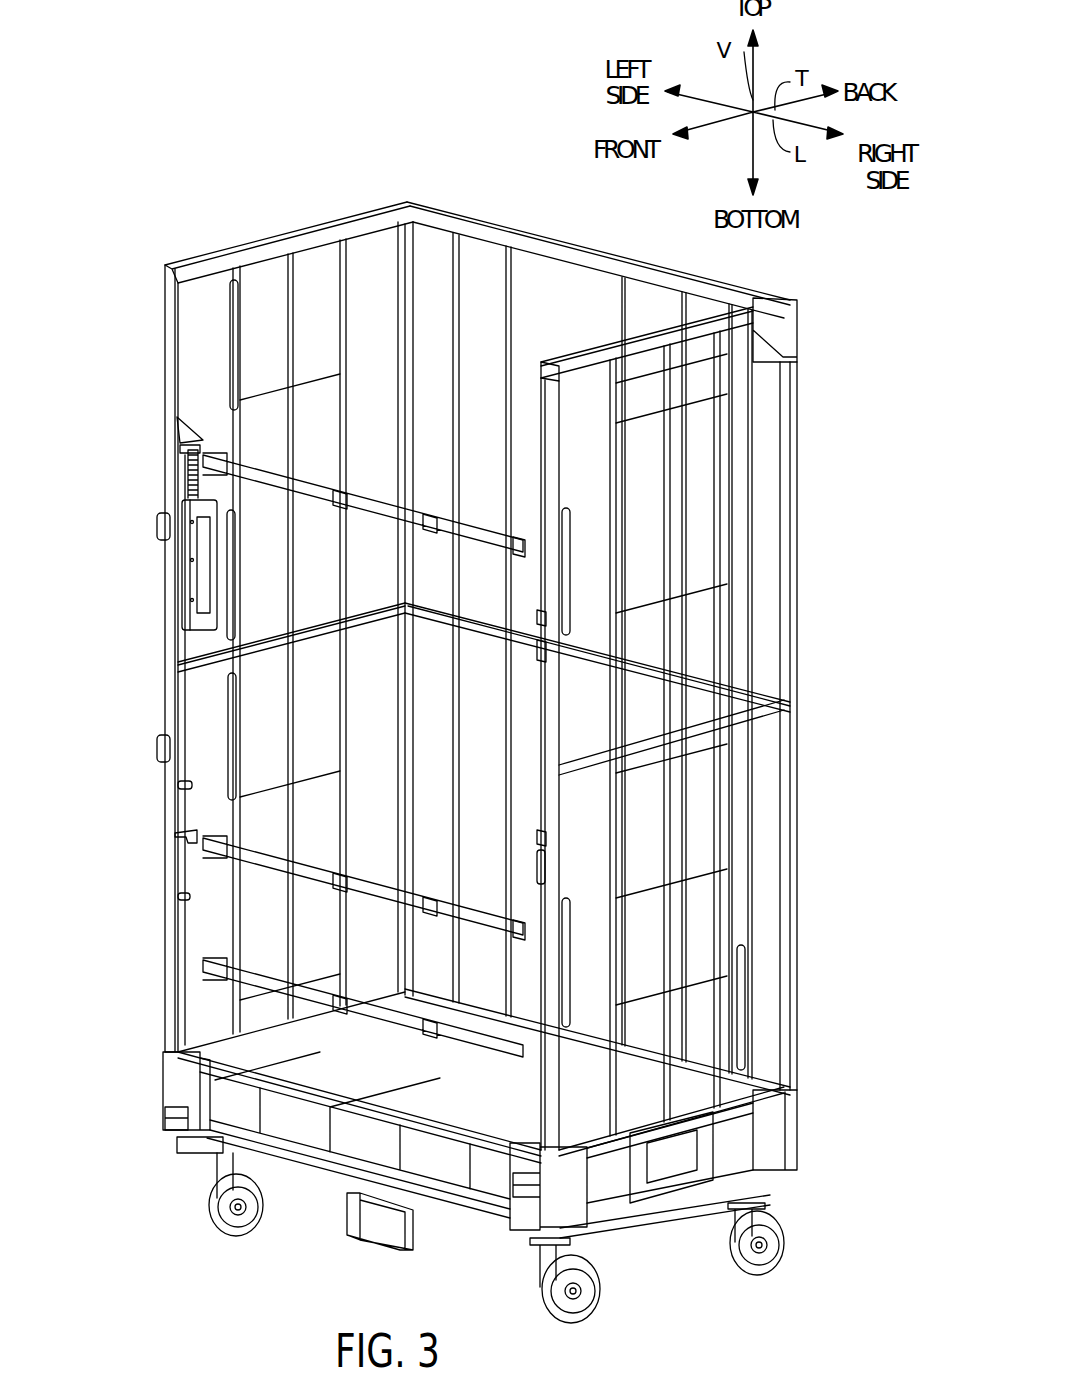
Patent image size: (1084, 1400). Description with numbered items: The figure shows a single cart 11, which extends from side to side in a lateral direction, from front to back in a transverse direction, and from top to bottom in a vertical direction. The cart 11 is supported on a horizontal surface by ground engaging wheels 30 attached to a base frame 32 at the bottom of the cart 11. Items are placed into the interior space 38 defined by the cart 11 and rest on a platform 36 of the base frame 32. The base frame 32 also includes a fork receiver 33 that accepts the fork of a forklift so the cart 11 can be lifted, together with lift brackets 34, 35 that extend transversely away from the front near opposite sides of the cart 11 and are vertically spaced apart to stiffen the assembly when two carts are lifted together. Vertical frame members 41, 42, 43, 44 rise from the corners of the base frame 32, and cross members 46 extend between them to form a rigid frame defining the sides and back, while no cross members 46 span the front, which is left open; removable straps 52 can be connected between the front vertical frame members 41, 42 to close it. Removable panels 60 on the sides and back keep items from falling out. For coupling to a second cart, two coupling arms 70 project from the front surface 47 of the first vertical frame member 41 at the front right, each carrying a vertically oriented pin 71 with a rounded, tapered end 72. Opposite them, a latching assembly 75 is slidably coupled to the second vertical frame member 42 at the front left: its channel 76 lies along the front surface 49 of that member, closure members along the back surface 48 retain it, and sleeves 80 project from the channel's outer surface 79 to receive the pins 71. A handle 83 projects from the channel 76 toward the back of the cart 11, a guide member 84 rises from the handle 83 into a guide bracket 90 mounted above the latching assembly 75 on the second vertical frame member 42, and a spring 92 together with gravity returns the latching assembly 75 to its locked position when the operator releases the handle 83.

The cart 11 is at (362, 218).
The ground engaging wheels 30 is at (266, 1200).
The base frame 32 is at (785, 1118).
The fork receiver 33 is at (367, 1243).
The lift bracket 34 is at (523, 1187).
The lift bracket 35 is at (170, 1120).
The platform 36 is at (163, 1052).
The interior space 38 is at (437, 298).
The first vertical frame member 41 is at (546, 1062).
The second vertical frame member 42 is at (183, 900).
The vertical frame member 43 is at (408, 325).
The vertical frame member 44 is at (793, 660).
The cross members 46 is at (275, 247).
The front surface 47 is at (560, 768).
The back surface 48 is at (197, 850).
The front surface 49 is at (180, 786).
The removable straps 52 is at (345, 496).
The removable panels 60 is at (236, 272).
The coupling arm 70 is at (568, 640).
The pin 71 is at (541, 648).
The tapered end 72 is at (535, 617).
The latching assembly 75 is at (172, 582).
The channel 76 is at (168, 710).
The outer surface 79 is at (172, 560).
The sleeve 80 is at (160, 535).
The handle 83 is at (207, 540).
The guide member 84 is at (192, 462).
The guide bracket 90 is at (183, 430).
The spring 92 is at (188, 492).